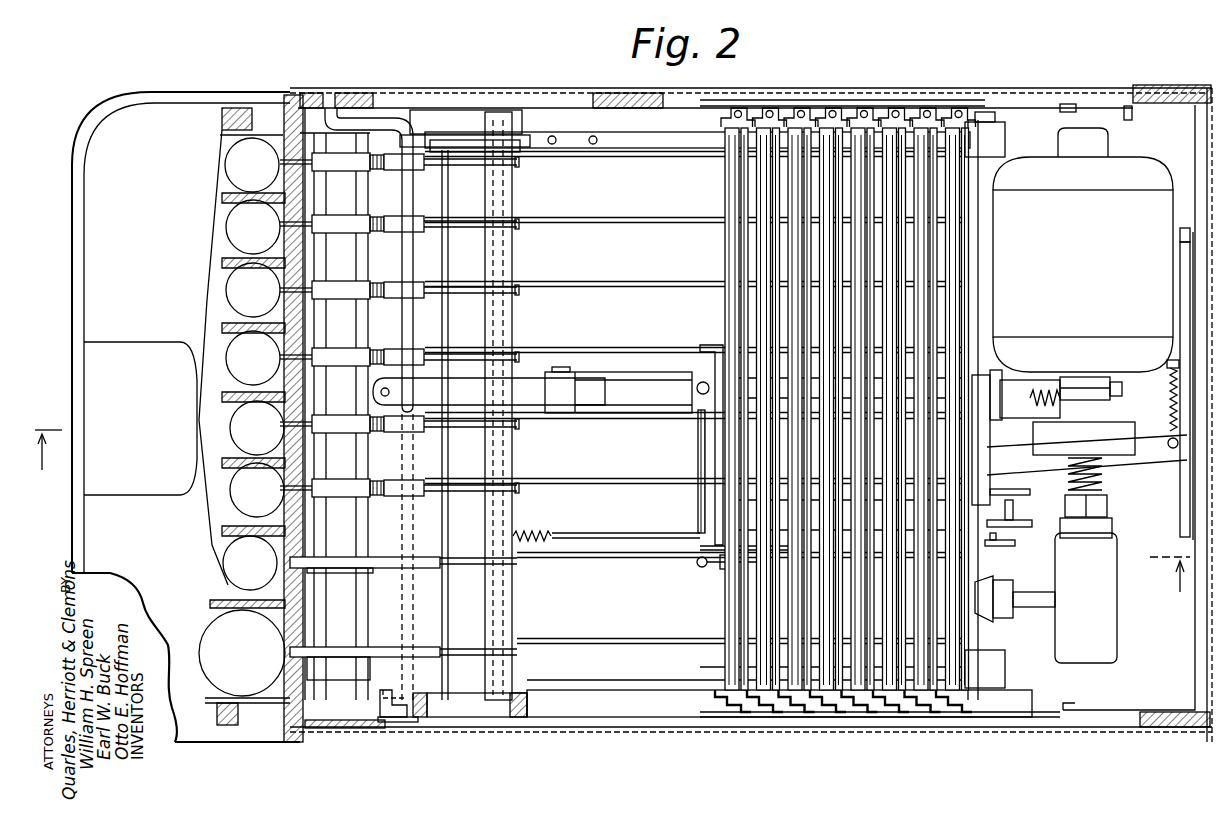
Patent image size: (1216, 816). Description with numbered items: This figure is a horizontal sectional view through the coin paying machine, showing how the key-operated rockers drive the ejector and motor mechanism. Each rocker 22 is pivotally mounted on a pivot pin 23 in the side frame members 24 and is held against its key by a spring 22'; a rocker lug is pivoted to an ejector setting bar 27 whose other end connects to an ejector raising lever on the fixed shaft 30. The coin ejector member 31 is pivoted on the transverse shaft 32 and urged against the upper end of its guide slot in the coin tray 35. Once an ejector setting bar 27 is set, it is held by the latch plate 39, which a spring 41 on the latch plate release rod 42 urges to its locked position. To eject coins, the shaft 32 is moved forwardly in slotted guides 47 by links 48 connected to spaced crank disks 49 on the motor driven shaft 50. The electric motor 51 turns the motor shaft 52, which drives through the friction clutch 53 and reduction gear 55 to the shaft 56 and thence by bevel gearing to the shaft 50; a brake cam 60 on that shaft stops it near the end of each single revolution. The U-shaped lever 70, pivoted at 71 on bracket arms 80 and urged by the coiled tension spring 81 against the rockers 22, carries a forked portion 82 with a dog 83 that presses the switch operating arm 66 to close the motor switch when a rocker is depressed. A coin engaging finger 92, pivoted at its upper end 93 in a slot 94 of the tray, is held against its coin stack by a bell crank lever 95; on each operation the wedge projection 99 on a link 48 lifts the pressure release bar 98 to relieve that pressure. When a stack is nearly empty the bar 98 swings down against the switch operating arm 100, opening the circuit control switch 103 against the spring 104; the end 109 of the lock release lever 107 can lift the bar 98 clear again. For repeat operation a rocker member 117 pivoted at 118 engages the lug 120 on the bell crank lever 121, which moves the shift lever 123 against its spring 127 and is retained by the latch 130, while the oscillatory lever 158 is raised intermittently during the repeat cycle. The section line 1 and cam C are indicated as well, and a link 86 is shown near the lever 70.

The section line 1 is at (612, 496).
The rocker 22 is at (833, 420).
The spring 22' is at (831, 116).
The pivot pin 23 is at (690, 118).
The side frame member 24 is at (660, 720).
The ejector setting bar 27 is at (626, 218).
The fixed shaft 30 is at (372, 462).
The coin ejector member 31 is at (388, 565).
The shaft 32 is at (512, 605).
The coin tray 35 is at (226, 555).
The latch plate 39 is at (448, 526).
The spring 41 is at (522, 536).
The latch plate release rod 42 is at (608, 535).
The slotted guide 47 is at (458, 120).
The link 48 is at (630, 136).
The crank disk 49 is at (1005, 142).
The motor driven shaft 50 is at (975, 288).
The electric motor 51 is at (1150, 192).
The motor shaft 52 is at (1088, 380).
The friction clutch 53 is at (1090, 452).
The reduction gear 55 is at (1105, 602).
The shaft 56 is at (1013, 608).
The brake cam 60 is at (1000, 415).
The switch operating arm 66 is at (1108, 508).
The U-shaped lever 70 is at (748, 555).
The pivot 71 is at (703, 380).
The bracket arm 80 is at (722, 352).
The coiled tension spring 81 is at (697, 455).
The forked portion 82 is at (996, 545).
The dog 83 is at (1020, 522).
The link 86 is at (728, 575).
The coin engaging finger 92 is at (280, 357).
The upper end pivot 93 is at (282, 300).
The slot 94 is at (282, 282).
The bell crank lever 95 is at (378, 356).
The pressure release bar 98 is at (408, 204).
The cam or wedge projection 99 is at (473, 150).
The switch operating arm 100 is at (520, 378).
The circuit control switch 103 is at (632, 380).
The coiled spring 104 is at (380, 393).
The lock release lever 107 is at (398, 722).
The end of lock release lever 109 is at (388, 690).
The rocker member 117 is at (1198, 150).
The pivot 118 is at (1062, 110).
The lug 120 is at (1180, 228).
The bell crank lever 121 is at (1182, 290).
The shift lever 123 is at (1148, 455).
The spring 127 is at (1170, 405).
The latch 130 is at (1172, 390).
The oscillatory lever 158 is at (1025, 492).
The cam C is at (215, 500).